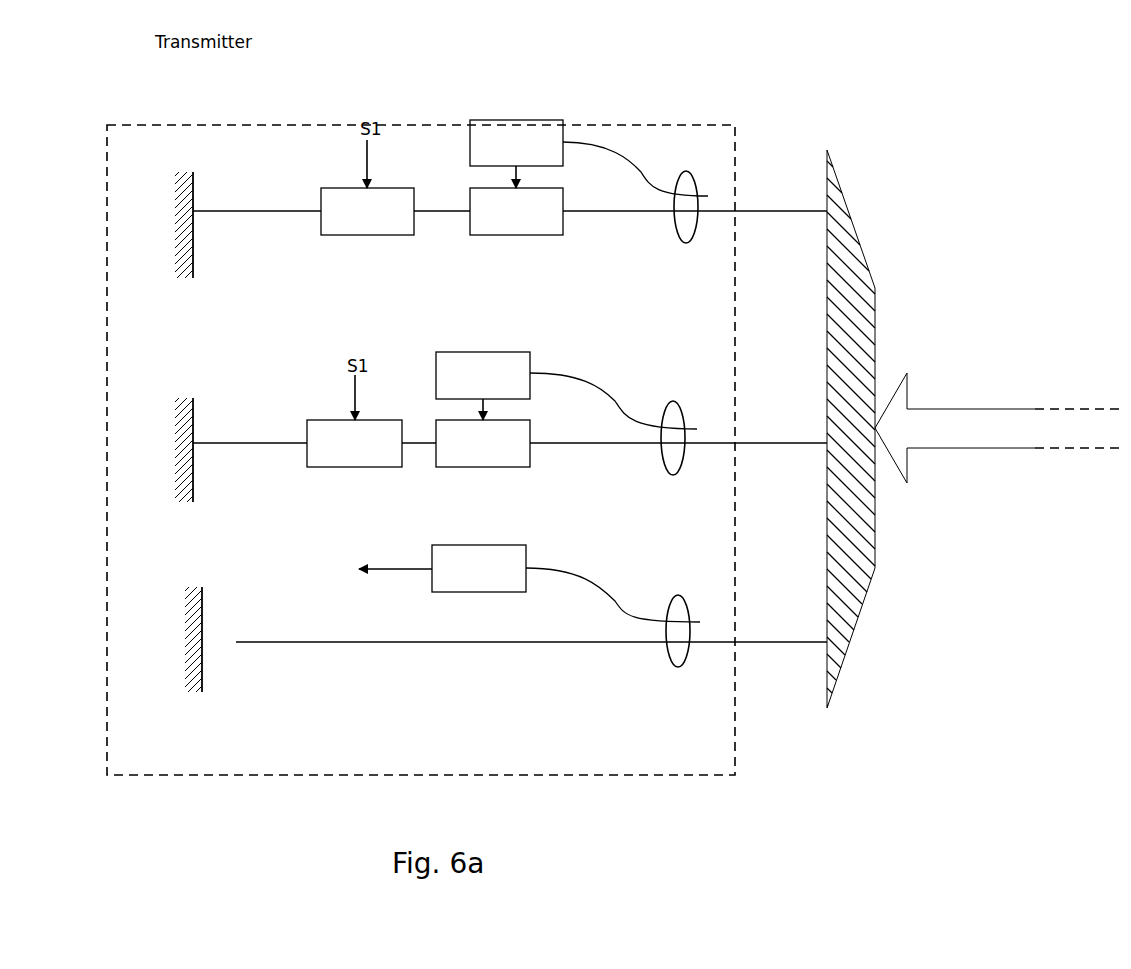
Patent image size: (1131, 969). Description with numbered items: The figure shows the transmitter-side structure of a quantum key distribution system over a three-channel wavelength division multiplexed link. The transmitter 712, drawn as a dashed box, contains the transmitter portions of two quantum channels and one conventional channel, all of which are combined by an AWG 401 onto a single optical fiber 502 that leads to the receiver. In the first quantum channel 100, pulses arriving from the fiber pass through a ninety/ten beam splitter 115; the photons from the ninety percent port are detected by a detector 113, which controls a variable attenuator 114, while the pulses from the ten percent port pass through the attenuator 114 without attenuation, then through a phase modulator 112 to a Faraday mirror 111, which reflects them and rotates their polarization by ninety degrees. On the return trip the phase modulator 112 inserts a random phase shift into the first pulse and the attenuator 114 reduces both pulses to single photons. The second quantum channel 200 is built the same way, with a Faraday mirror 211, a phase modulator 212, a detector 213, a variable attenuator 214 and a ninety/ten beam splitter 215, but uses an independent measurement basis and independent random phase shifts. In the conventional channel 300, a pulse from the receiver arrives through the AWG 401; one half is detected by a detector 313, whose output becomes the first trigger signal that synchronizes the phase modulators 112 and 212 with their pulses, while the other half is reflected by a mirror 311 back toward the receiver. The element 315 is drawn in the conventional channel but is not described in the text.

The transmitter 712 is at (375, 70).
The Faraday mirror 111 is at (183, 177).
The phase modulator 112 is at (338, 190).
The detector 113 is at (478, 127).
The variable attenuator 114 is at (551, 228).
The 90/10 beam splitter 115 is at (687, 233).
The quantum channel 100 is at (773, 211).
The Faraday mirror 211 is at (183, 400).
The phase modulator 212 is at (330, 420).
The detector 213 is at (478, 352).
The variable attenuator 214 is at (533, 461).
The 90/10 beam splitter 215 is at (672, 474).
The second quantum channel 200 is at (797, 443).
The mirror 311 is at (190, 590).
The detector 313 is at (455, 545).
The lens of third channel 315 is at (678, 656).
The conventional channel 300 is at (807, 642).
The AWG 401 is at (845, 215).
The optical fiber 502 is at (973, 449).